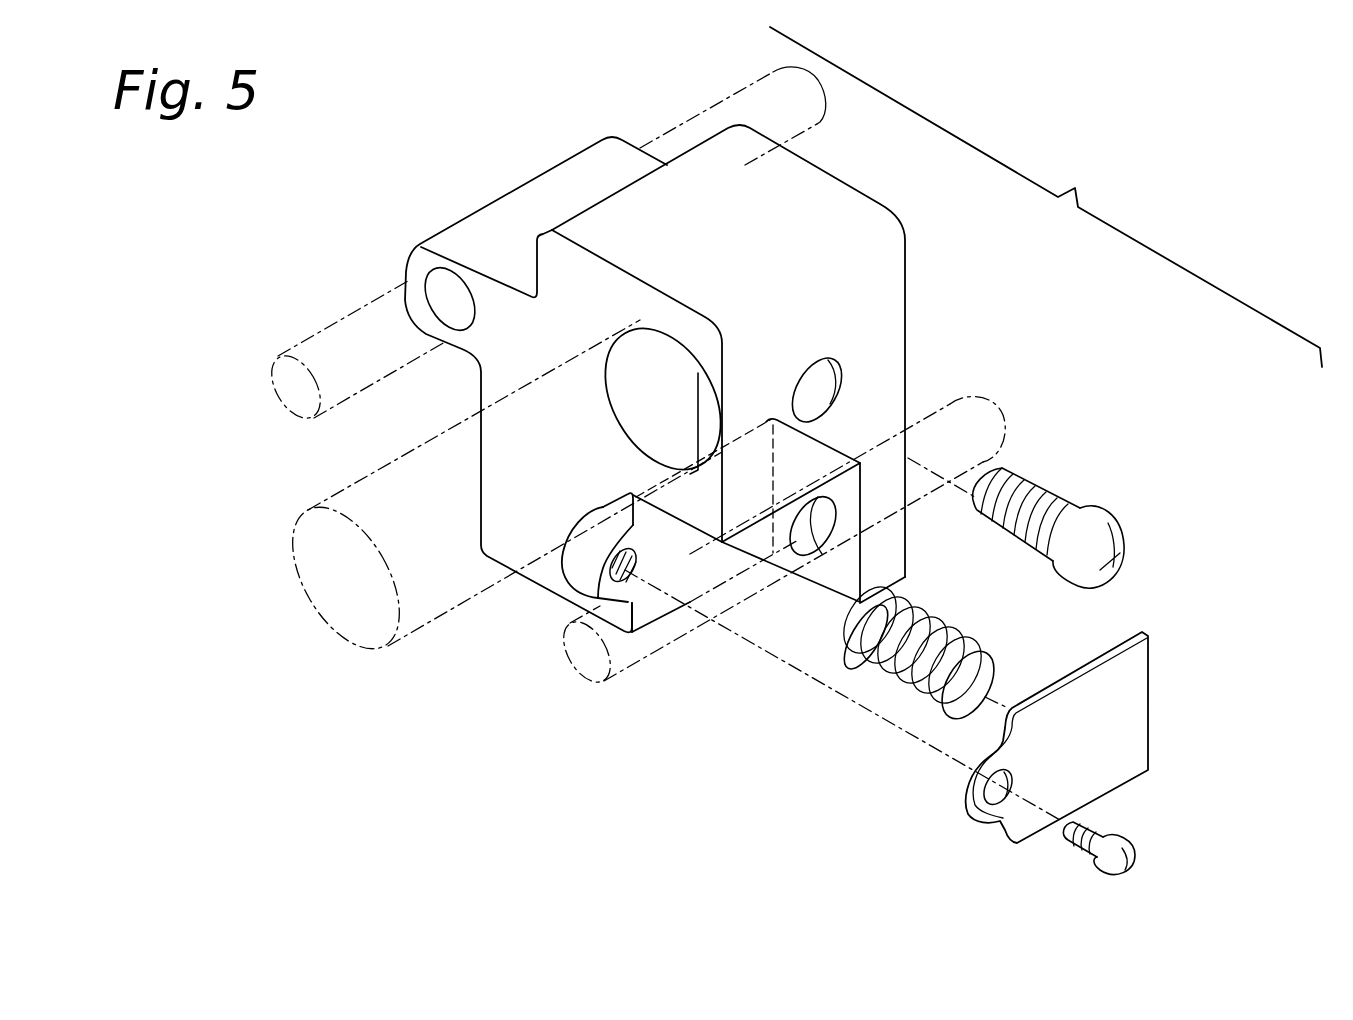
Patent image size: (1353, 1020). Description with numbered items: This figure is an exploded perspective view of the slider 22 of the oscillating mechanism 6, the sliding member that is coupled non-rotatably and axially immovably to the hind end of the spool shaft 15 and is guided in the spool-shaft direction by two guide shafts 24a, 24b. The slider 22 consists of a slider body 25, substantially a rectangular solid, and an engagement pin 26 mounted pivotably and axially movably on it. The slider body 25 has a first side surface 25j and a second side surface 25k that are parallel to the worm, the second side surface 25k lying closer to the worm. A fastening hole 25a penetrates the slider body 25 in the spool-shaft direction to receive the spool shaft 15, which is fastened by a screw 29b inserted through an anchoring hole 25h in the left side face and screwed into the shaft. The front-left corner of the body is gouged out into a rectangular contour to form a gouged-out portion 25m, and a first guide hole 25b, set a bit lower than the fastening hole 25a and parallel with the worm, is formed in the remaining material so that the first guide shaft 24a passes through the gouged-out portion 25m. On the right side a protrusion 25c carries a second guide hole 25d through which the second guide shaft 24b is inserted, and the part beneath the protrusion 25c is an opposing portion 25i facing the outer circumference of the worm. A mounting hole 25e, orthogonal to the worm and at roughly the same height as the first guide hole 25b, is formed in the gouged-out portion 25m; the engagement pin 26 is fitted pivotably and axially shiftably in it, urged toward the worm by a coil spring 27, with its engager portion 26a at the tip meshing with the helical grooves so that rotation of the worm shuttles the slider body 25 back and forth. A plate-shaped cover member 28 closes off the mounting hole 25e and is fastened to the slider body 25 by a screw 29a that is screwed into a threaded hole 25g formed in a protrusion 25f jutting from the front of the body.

The oscillating mechanism 6 is at (658, 119).
The spool shaft 15 is at (455, 620).
The slider 22 is at (862, 241).
The first guide shaft 24a is at (1003, 431).
The second guide shaft 24b is at (832, 104).
The slider body 25 is at (880, 300).
The fastening hole 25a is at (655, 437).
The first guide hole 25b is at (820, 556).
The protrusion 25c is at (422, 257).
The second guide hole 25d is at (458, 310).
The mounting hole 25e is at (718, 485).
The protrusion 25f is at (568, 565).
The threaded hole 25g is at (616, 632).
The anchoring hole 25h is at (826, 392).
The opposing portion 25i is at (478, 456).
The first side surface 25j is at (812, 322).
The second side surface 25k is at (478, 395).
The gouged-out portion 25m is at (757, 548).
The engagement pin 26 is at (916, 609).
The engager portion 26a is at (890, 587).
The coil spring 27 is at (988, 658).
The cover member 28 is at (1137, 688).
The screw 29a is at (1130, 833).
The screw 29b is at (1112, 532).